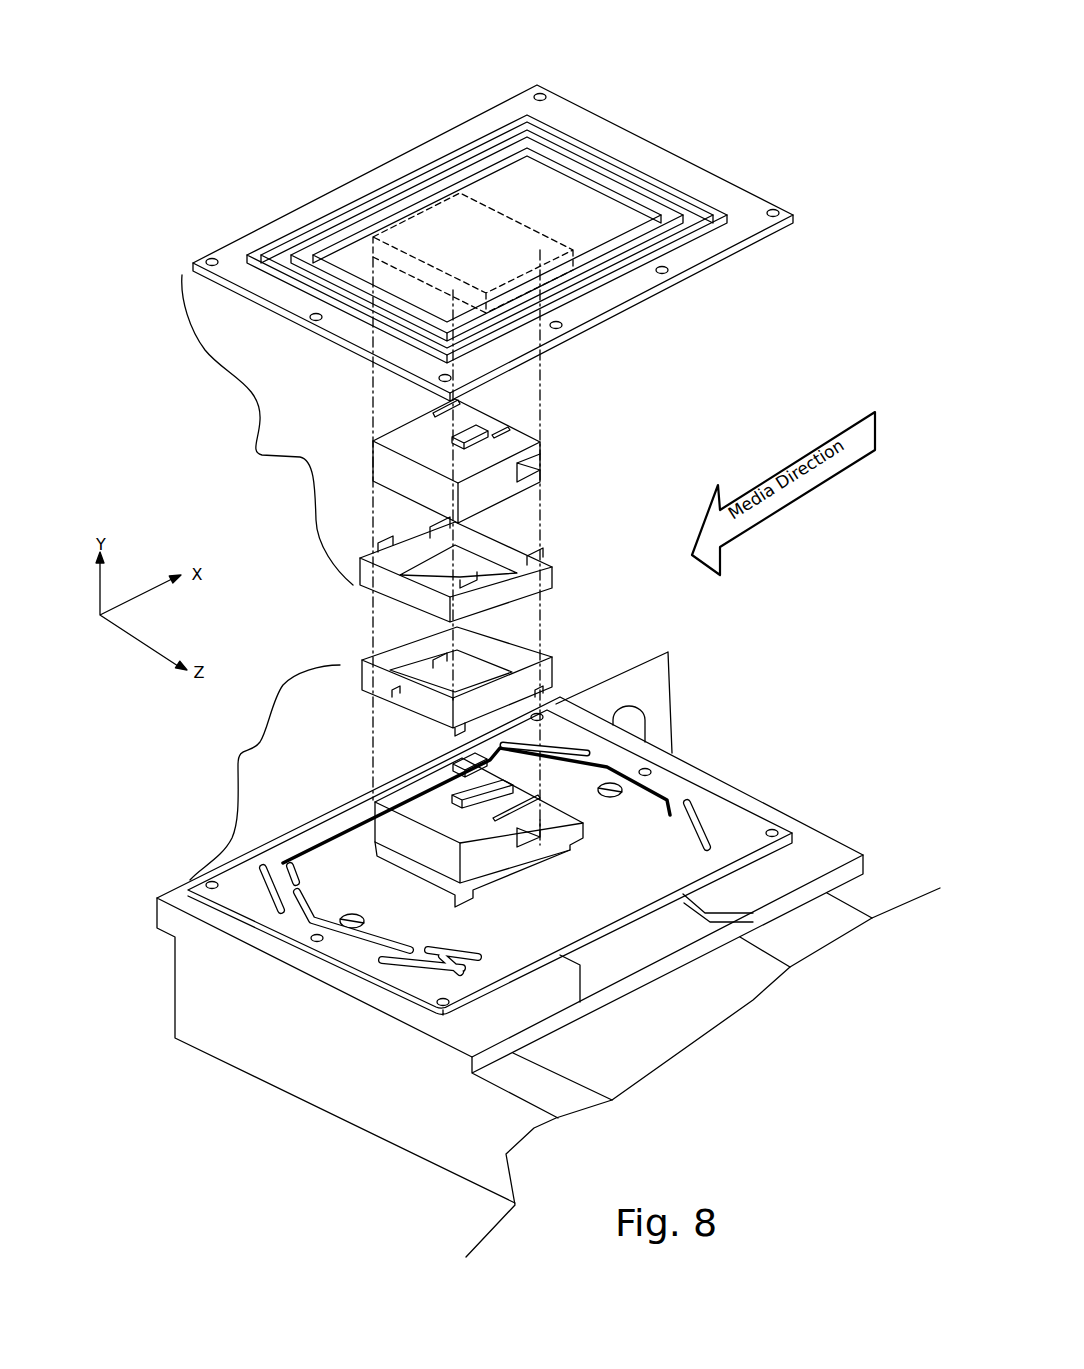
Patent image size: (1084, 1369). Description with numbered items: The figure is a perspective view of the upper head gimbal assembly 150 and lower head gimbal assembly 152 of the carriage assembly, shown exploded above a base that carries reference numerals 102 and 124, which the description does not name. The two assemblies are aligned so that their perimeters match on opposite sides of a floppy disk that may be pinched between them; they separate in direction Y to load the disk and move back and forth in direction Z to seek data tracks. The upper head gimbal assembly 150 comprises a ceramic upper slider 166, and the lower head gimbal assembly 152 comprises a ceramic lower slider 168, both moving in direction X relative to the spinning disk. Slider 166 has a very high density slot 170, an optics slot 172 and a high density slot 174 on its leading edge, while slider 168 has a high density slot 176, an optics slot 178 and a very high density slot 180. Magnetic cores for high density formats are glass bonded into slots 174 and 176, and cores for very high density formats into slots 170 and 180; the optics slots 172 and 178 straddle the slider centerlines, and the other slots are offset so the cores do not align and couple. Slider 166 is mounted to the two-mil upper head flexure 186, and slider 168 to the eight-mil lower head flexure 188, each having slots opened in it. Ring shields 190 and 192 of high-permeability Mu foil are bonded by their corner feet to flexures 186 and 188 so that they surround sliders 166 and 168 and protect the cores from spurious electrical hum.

The base frame 102 is at (548, 977).
The side wall 124 is at (669, 698).
The upper head gimbal assembly 150 is at (262, 456).
The lower head gimbal assembly 152 is at (237, 752).
The upper slider 166 is at (507, 500).
The lower slider 168 is at (410, 843).
The very high density (VHD) slot 170 is at (459, 402).
The optics slot 172 is at (462, 448).
The high density (HD) slot 174 is at (509, 428).
The high density (HD) slot 176 is at (455, 768).
The optics slot 178 is at (452, 798).
The very high density (VHD) slot 180 is at (528, 797).
The upper head flexure 186 is at (478, 248).
The lower head flexure 188 is at (490, 862).
The ring shield 190 is at (553, 568).
The ring shield 192 is at (561, 661).